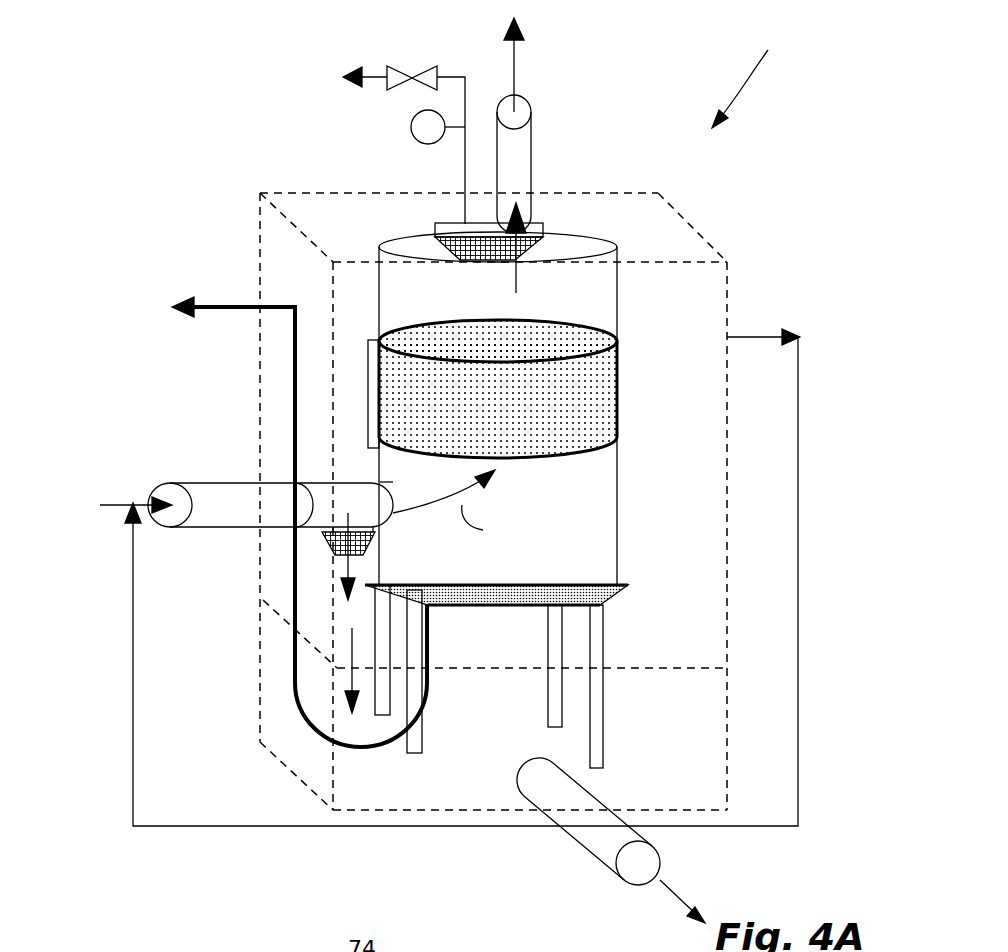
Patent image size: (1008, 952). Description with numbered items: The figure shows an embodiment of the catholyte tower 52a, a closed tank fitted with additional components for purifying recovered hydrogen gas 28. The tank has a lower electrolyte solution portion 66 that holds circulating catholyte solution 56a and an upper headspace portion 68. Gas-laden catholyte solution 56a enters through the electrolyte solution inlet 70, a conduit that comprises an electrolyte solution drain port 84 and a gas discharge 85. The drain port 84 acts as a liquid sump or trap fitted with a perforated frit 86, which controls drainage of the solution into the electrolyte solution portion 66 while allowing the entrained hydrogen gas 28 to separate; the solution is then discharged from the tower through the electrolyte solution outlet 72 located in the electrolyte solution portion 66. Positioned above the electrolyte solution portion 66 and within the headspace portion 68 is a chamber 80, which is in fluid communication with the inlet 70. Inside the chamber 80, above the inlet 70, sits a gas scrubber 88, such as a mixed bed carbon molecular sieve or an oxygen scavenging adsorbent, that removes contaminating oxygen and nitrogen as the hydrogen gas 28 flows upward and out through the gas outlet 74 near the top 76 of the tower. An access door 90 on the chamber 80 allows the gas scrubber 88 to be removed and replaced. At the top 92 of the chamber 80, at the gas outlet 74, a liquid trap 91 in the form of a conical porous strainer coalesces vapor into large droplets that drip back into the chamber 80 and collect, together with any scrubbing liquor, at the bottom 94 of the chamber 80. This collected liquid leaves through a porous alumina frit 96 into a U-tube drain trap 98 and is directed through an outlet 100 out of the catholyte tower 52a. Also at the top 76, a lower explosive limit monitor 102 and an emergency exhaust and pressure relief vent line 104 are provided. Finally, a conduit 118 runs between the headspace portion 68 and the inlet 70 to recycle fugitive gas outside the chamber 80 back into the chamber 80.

The hydrogen gas 28 is at (518, 67).
The catholyte tower 52a is at (762, 74).
The catholyte solution 56a is at (150, 493).
The electrolyte solution portion 66 is at (680, 752).
The headspace portion 68 is at (693, 325).
The electrolyte solution inlet 70 is at (188, 482).
The electrolyte solution outlet 72 is at (577, 843).
The gas outlet 74 is at (532, 145).
The top 76 is at (317, 203).
The chamber 80 is at (617, 502).
The electrolyte solution drain port 84 is at (350, 522).
The gas discharge 85 is at (387, 482).
The perforated frit 86 is at (327, 547).
The gas scrubber 88 is at (617, 413).
The access door 90 is at (368, 353).
The liquid trap 91 is at (548, 233).
The top of the chamber 92 is at (541, 251).
The bottom of the chamber 94 is at (618, 588).
The porous alumina frit 96 is at (587, 585).
The U-tube drain trap 98 is at (313, 730).
The outlet 100 is at (213, 303).
The lower explosive limit monitor 102 is at (413, 135).
The emergency exhaust and pressure relief vent line 104 is at (409, 76).
The conduit 118 is at (758, 335).